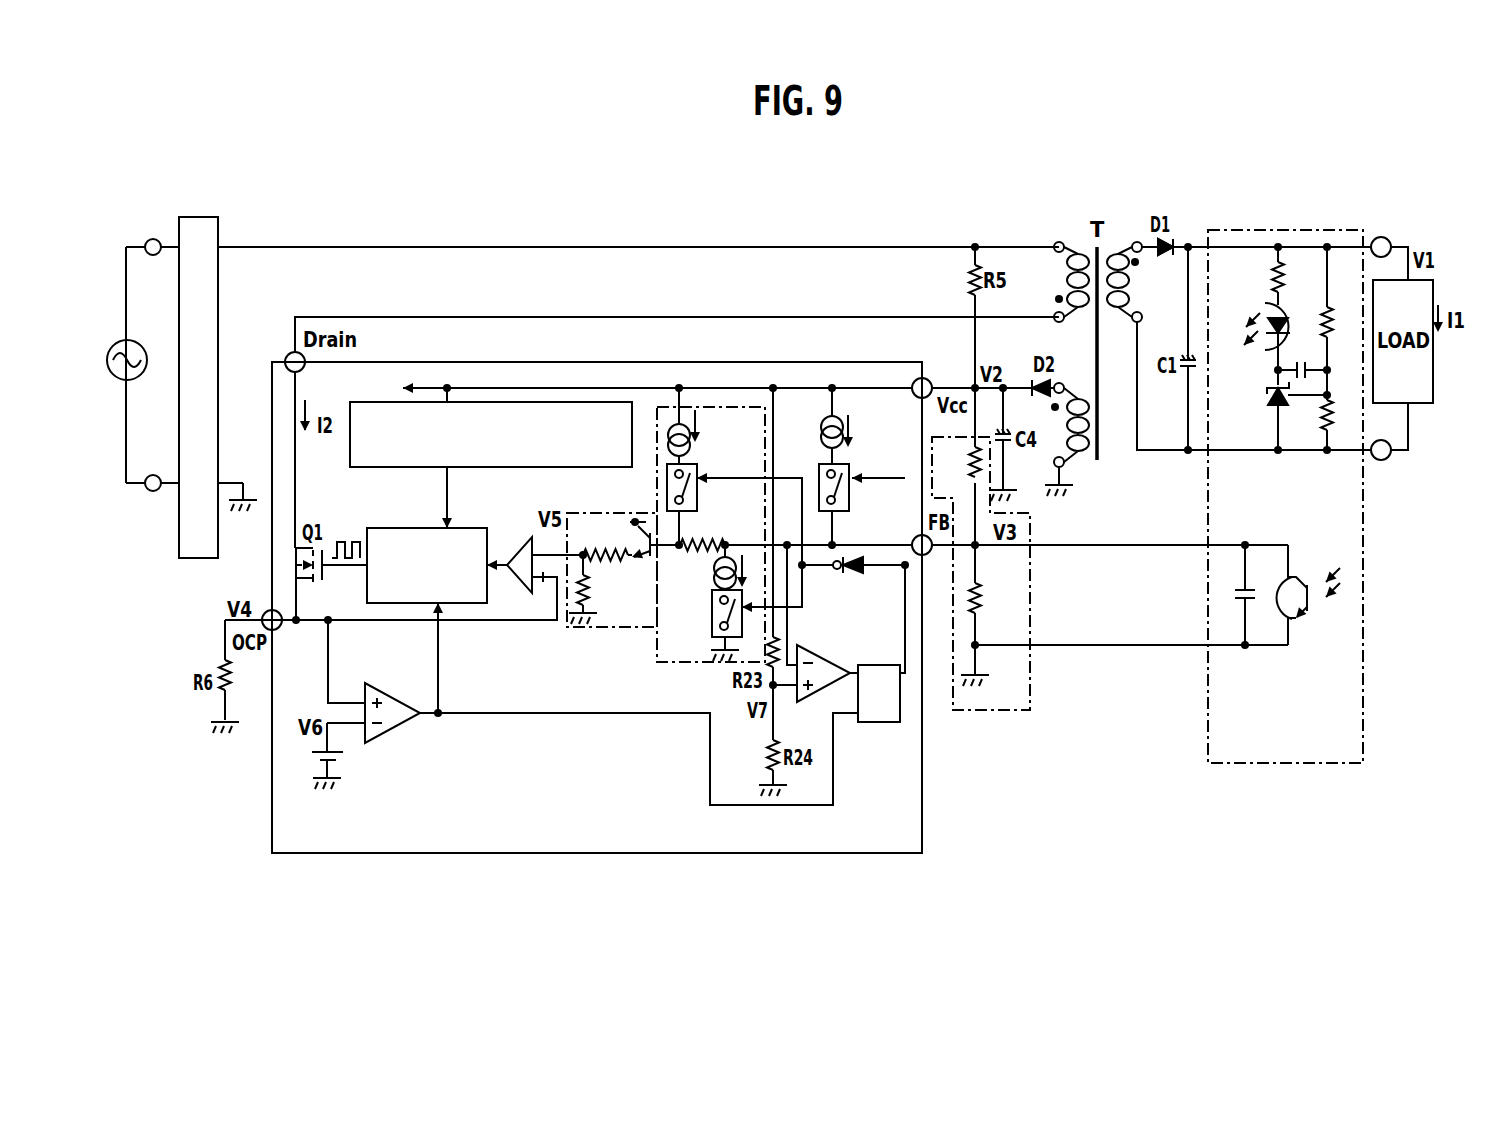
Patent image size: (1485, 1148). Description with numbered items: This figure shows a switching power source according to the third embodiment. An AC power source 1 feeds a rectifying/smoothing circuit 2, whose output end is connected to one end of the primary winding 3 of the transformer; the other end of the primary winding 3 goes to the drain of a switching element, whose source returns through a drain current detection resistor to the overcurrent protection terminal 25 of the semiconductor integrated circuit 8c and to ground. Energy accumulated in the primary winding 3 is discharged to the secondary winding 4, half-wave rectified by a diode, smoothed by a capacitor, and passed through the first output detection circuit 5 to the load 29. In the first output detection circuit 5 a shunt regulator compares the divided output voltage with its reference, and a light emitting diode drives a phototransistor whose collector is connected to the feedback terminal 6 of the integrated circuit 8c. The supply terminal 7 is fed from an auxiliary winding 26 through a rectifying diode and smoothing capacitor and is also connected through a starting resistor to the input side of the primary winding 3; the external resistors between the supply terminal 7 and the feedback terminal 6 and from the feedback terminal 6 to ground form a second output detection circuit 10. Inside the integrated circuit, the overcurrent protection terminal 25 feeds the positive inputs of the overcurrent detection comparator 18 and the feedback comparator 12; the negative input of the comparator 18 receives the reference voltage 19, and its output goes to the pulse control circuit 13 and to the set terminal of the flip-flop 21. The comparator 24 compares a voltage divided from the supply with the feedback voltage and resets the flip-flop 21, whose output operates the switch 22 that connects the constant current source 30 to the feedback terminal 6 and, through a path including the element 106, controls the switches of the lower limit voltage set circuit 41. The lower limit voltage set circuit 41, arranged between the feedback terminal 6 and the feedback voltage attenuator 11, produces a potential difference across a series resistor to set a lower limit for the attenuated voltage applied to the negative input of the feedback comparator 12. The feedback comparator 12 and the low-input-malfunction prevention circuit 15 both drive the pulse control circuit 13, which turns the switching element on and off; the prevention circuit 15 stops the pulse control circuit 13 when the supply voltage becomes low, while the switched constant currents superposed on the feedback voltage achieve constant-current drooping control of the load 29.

The AC power source 1 is at (137, 345).
The rectifying/smoothing circuit 2 is at (198, 215).
The primary winding 3 is at (1058, 285).
The secondary winding 4 is at (1130, 296).
The first output detection circuit 5 is at (1243, 765).
The feedback FB terminal 6 is at (925, 555).
The Vcc terminal 7 is at (930, 379).
The semiconductor integrated circuit 8c is at (504, 856).
The second output detection circuit 10 is at (975, 712).
The feedback voltage attenuator 11 is at (620, 628).
The feedback comparator 12 is at (527, 552).
The pulse control circuit 13 is at (370, 526).
The low-input-malfunction prevention circuit 15 is at (556, 468).
The overcurrent detection comparator 18 is at (392, 736).
The reference voltage 19 is at (333, 758).
The flip-flop 21 is at (878, 723).
The switch 22 is at (846, 511).
The comparator 24 is at (834, 658).
The OCP terminal 25 is at (267, 609).
The auxiliary winding 26 is at (1088, 466).
The load 29 is at (1418, 405).
The constant current source 30 is at (822, 428).
The lower limit voltage set circuit 41 is at (678, 663).
The diode 106 is at (850, 574).